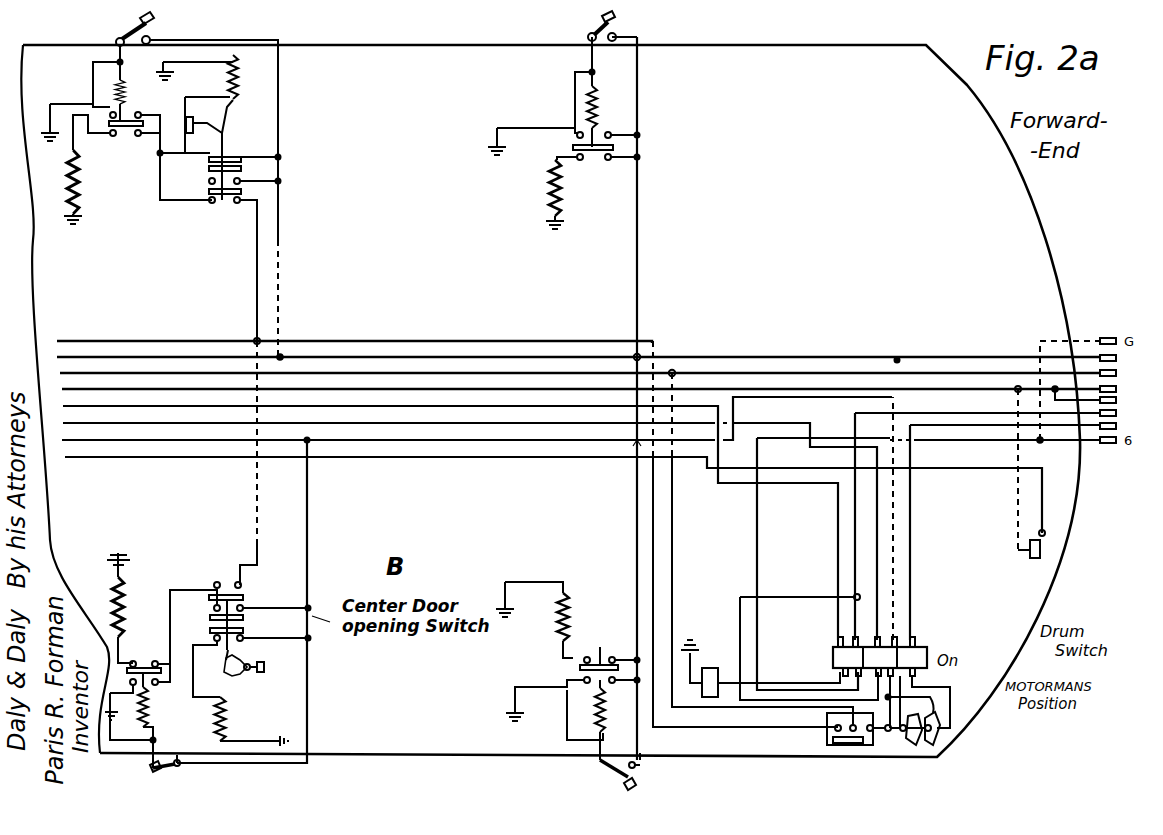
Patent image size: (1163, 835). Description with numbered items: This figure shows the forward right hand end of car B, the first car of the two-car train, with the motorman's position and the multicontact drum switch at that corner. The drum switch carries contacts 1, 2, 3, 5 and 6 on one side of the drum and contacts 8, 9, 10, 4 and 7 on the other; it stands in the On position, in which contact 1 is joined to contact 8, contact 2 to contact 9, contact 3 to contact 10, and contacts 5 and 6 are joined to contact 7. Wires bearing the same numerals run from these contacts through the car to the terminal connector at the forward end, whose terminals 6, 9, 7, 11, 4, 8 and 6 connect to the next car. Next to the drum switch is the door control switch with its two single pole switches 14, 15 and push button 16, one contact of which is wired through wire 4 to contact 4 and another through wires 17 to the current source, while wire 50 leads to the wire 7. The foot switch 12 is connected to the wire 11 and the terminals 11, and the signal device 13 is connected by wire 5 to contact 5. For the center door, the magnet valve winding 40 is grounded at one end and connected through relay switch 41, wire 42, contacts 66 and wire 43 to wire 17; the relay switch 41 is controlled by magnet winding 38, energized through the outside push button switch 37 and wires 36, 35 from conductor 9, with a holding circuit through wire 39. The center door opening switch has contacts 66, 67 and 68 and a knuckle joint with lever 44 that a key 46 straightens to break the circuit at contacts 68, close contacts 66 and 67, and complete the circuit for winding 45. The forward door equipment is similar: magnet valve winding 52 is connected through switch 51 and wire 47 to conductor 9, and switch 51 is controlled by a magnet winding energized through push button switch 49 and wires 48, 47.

The drum switch contact 1 is at (917, 678).
The drum switch contact 2 is at (908, 702).
The drum switch contact 3 is at (881, 702).
The contact and wire 4 is at (963, 415).
The contact and wire 5 is at (838, 674).
The contact and terminal 6 is at (758, 585).
The contact and wire 7 is at (540, 372).
The contact and wire 8 is at (915, 640).
The contact and conductor 9 is at (181, 355).
The contact and wire 10 is at (372, 426).
The wire and terminal 11 is at (484, 387).
The foot switch 12 is at (1028, 552).
The signal device 13 is at (714, 666).
The single pole switch 14 is at (940, 757).
The single pole switch 15 is at (917, 748).
The push button 16 is at (853, 746).
The wire 17 is at (378, 355).
The wire 35 is at (316, 514).
The wire 36 is at (316, 699).
The push button switch 37 is at (178, 770).
The magnet winding 38 is at (154, 716).
The wire 39 is at (132, 730).
The magnet valve winding 40 is at (128, 608).
The relay switch 41 is at (130, 648).
The wire 42 is at (172, 650).
The wire 43 is at (256, 532).
The lever 44 is at (223, 666).
The winding 45 is at (230, 713).
The key 46 is at (265, 668).
The wire 47 is at (637, 545).
The wire 48 is at (642, 745).
The push button switch 49 is at (606, 779).
The wire 50 is at (676, 617).
The switch 51 is at (600, 656).
The magnet valve winding 52 is at (578, 608).
The contacts 66 is at (236, 581).
The contacts 67 is at (243, 606).
The contacts 68 is at (242, 646).